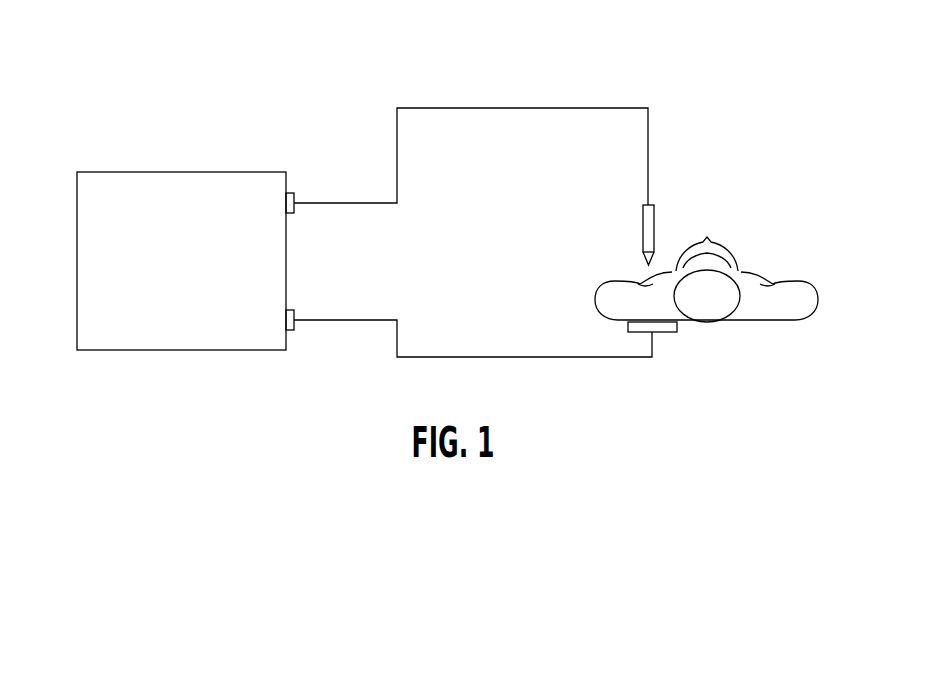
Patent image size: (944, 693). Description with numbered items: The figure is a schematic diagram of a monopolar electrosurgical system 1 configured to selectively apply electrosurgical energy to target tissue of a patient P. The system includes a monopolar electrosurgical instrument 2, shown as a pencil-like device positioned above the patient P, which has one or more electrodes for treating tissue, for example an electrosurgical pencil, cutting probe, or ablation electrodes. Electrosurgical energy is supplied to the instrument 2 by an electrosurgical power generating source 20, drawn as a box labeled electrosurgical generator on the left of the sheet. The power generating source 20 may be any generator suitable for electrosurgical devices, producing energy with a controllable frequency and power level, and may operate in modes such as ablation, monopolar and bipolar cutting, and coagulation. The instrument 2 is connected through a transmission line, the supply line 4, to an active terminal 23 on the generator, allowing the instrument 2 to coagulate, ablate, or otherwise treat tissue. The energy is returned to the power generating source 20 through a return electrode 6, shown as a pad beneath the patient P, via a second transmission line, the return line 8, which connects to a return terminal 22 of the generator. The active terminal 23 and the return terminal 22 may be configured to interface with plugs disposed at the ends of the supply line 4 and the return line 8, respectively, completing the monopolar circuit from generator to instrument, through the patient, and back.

The monopolar electrosurgical system 1 is at (350, 58).
The monopolar electrosurgical instrument 2 is at (643, 233).
The supply line 4 is at (522, 108).
The return electrode 6 is at (666, 333).
The return line 8 is at (540, 358).
The electrosurgical power generating source 20 is at (108, 172).
The return terminal 22 is at (291, 310).
The active terminal 23 is at (291, 193).
The patient P is at (788, 260).